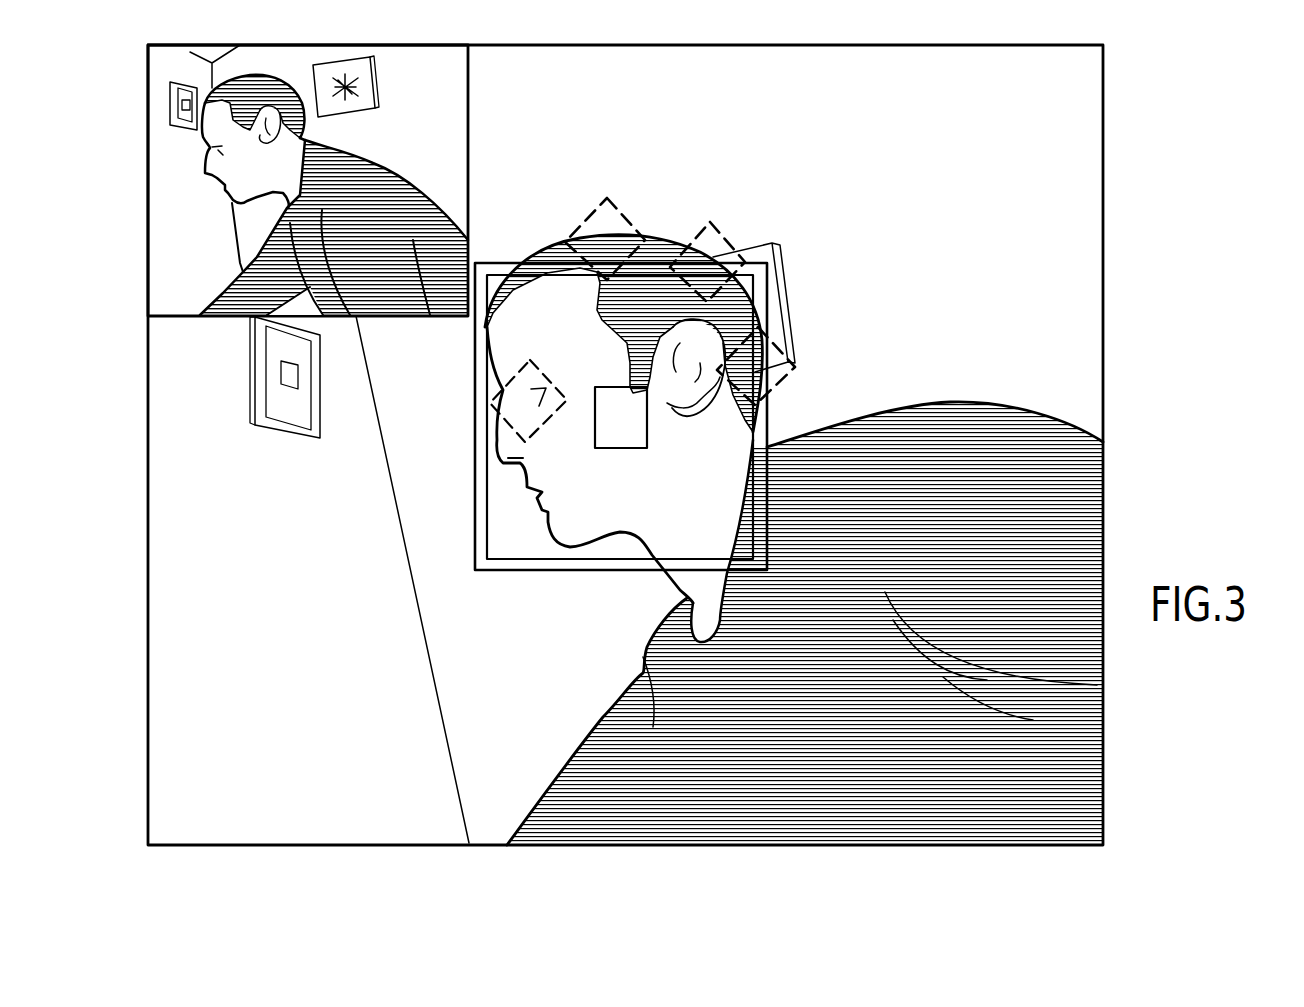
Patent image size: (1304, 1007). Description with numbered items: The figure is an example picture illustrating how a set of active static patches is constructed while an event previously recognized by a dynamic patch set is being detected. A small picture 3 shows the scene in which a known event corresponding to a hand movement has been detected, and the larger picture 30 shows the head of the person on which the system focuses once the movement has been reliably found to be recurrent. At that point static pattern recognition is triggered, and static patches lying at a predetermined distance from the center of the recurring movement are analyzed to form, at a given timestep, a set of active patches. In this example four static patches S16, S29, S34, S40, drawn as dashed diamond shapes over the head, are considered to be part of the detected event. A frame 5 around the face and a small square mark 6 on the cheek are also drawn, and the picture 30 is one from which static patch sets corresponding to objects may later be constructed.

The picture 3 is at (275, 45).
The picture 30 is at (1103, 212).
The face detection frame 5 is at (473, 410).
The feature point mark 6 is at (605, 450).
The static patch S16 is at (607, 198).
The static patch S29 is at (547, 363).
The static patch S34 is at (710, 222).
The static patch S40 is at (790, 337).